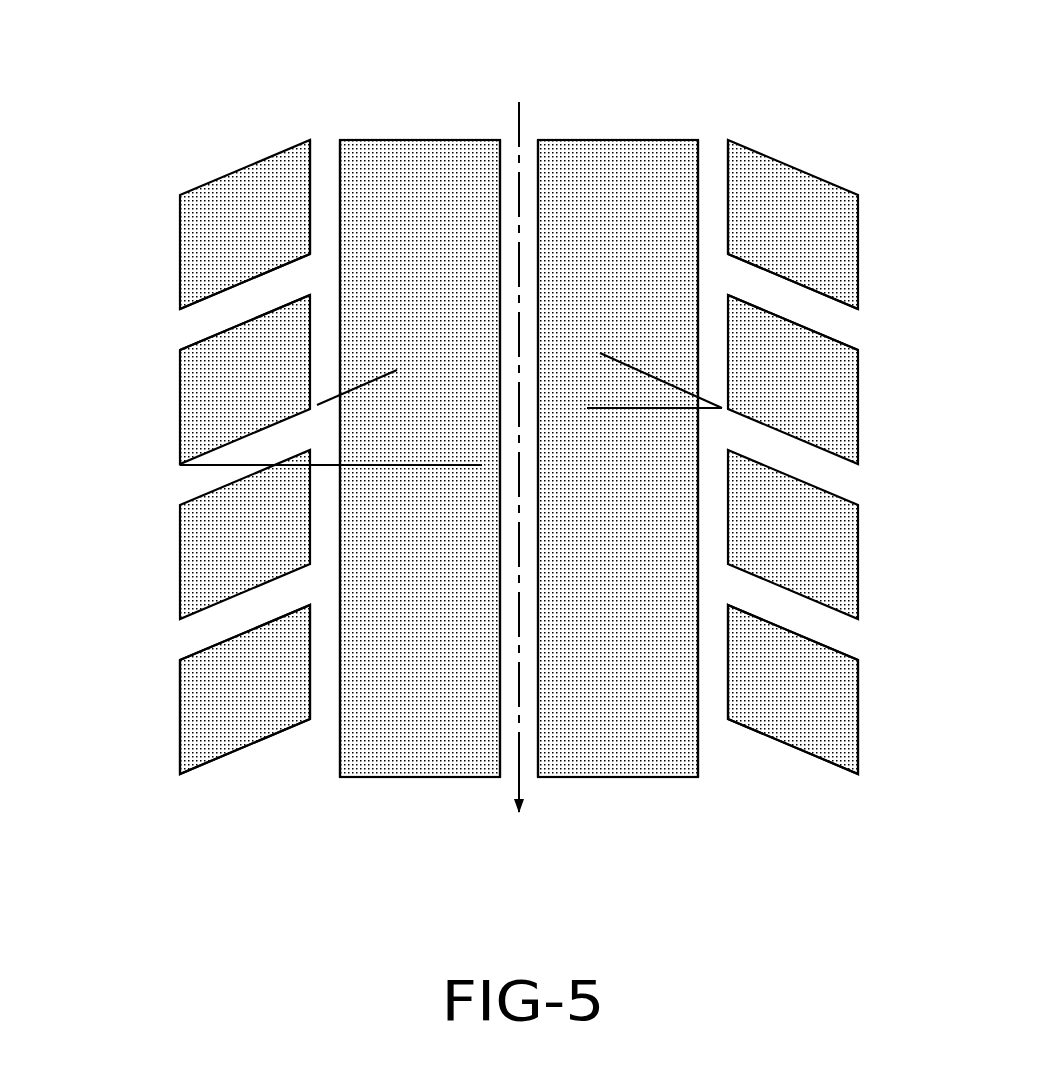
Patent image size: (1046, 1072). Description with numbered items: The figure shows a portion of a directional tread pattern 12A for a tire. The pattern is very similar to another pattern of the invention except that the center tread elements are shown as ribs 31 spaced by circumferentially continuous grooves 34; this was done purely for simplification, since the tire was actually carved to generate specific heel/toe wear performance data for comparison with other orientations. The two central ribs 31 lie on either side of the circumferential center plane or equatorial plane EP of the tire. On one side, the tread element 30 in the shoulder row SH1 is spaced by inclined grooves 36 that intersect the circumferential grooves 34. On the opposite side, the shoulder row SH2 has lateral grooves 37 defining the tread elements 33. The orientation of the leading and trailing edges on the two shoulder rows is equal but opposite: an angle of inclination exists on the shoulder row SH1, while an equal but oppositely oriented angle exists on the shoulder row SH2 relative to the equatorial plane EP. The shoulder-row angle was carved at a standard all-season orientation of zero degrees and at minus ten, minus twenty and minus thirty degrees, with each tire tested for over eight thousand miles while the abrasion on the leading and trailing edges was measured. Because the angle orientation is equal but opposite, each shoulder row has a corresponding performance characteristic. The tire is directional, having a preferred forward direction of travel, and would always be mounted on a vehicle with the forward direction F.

The tread pattern 12A is at (163, 191).
The tread element 30 is at (243, 188).
The ribs 31 is at (390, 157).
The tread elements 33 is at (797, 190).
The circumferential grooves 34 is at (328, 147).
The inclined grooves 36 is at (193, 315).
The lateral grooves 37 is at (843, 315).
The equatorial plane EP is at (519, 423).
The forward direction F is at (519, 813).
The shoulder row SH1 is at (238, 780).
The shoulder row SH2 is at (800, 780).